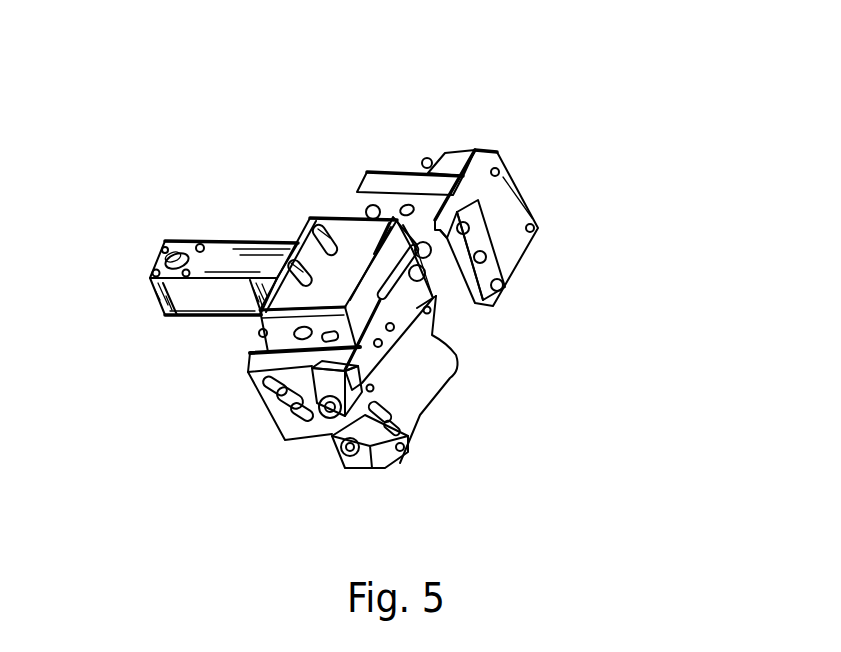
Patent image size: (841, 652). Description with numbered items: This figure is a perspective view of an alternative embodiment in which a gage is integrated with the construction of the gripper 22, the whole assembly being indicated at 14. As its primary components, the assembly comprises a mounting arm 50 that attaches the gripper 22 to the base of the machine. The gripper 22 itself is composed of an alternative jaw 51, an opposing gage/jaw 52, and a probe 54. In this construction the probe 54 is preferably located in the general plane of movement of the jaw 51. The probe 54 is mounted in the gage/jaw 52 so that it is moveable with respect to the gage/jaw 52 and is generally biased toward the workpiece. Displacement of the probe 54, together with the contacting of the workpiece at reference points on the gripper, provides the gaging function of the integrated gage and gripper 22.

The dispensing head assembly 14 is at (157, 104).
The gripper 22 is at (337, 212).
The mounting arm 50 is at (220, 302).
The jaw 51 is at (477, 300).
The gage/jaw 52 is at (418, 372).
The probe 54 is at (387, 423).